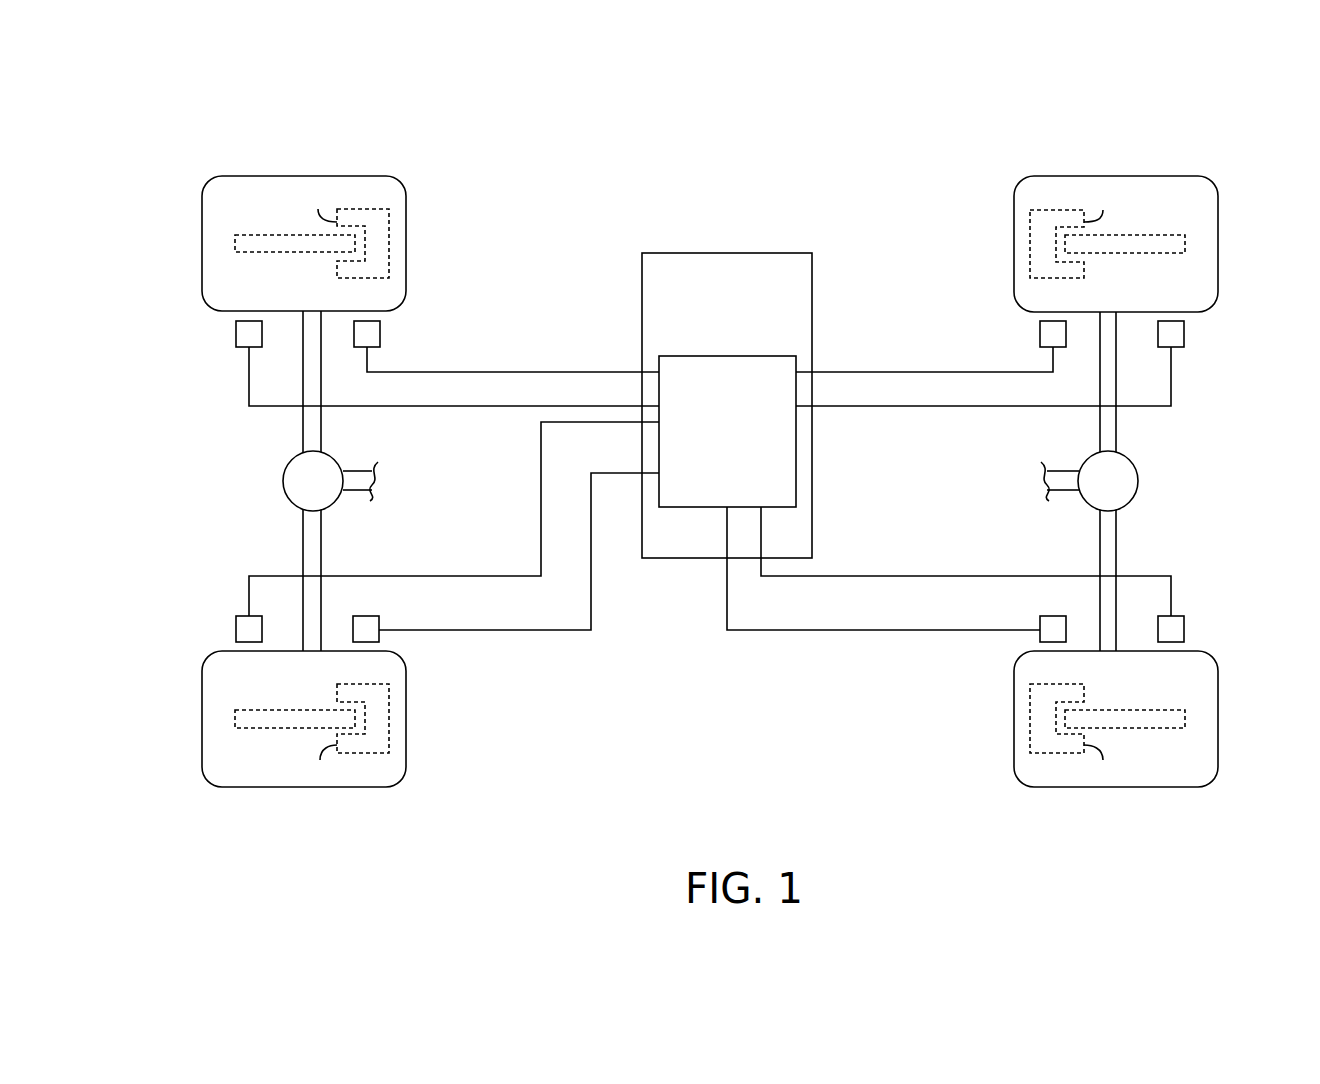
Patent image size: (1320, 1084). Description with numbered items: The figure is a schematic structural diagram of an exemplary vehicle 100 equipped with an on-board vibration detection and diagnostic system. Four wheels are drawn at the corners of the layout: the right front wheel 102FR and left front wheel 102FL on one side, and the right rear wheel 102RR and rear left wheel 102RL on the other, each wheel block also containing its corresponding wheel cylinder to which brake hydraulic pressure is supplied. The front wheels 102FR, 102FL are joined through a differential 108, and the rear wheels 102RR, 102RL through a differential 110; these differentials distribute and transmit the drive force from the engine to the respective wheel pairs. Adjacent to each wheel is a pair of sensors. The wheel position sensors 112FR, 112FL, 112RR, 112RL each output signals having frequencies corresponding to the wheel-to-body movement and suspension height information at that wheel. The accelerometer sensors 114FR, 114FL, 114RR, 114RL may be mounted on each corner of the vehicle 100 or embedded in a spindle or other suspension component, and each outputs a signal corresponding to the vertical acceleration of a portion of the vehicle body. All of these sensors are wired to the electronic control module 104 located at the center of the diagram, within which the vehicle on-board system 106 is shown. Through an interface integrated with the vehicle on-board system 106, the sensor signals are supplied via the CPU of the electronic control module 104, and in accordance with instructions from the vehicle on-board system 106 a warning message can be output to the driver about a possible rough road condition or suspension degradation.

The vehicle 100 is at (140, 120).
The right front wheel 102FR is at (234, 176).
The left front wheel 102FL is at (235, 787).
The right rear wheel 102RR is at (1183, 176).
The rear left wheel 102RL is at (1190, 787).
The electronic control module 104 is at (727, 405).
The vehicle on-board system 106 is at (727, 431).
The differential 108 is at (336, 456).
The differential 110 is at (1088, 456).
The wheel position sensor 112FR is at (236, 333).
The wheel position sensor 112FL is at (236, 632).
The wheel position sensor 112RR is at (1040, 333).
The wheel position sensor 112RL is at (1050, 616).
The accelerometer sensor 114FR is at (380, 333).
The accelerometer sensor 114FL is at (363, 616).
The accelerometer sensor 114RR is at (1184, 334).
The accelerometer sensor 114RL is at (1184, 632).